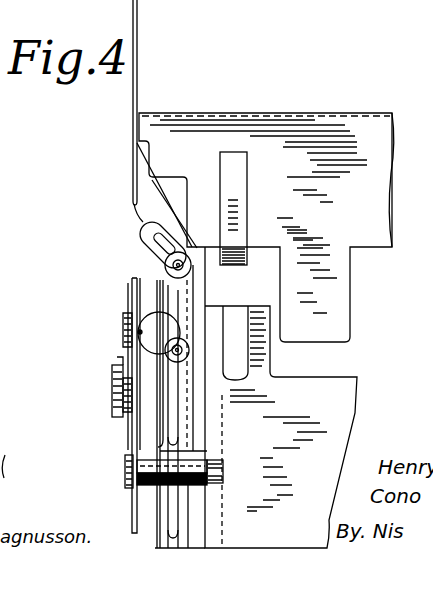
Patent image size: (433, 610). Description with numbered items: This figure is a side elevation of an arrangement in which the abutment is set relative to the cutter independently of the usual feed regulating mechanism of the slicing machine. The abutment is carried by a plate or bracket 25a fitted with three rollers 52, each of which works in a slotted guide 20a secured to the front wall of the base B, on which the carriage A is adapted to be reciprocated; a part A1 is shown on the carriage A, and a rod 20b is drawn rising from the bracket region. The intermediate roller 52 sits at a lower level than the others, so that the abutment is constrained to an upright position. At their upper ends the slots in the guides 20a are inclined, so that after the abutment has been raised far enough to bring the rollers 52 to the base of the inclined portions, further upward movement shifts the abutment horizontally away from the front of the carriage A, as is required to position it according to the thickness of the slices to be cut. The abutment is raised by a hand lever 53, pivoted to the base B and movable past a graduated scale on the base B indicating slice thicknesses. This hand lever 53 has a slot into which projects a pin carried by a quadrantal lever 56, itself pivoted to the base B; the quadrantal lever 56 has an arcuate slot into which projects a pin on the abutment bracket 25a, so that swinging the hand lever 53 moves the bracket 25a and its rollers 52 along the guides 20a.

The rod 20b is at (138, 28).
The plate or bracket 25a is at (143, 189).
The rollers 52 is at (165, 270).
The slotted guide 20a is at (172, 550).
The hand lever 53 is at (113, 428).
The quadrantal lever 56 is at (132, 500).
The carriage A is at (266, 227).
The bar A1 is at (236, 173).
The base B is at (330, 428).